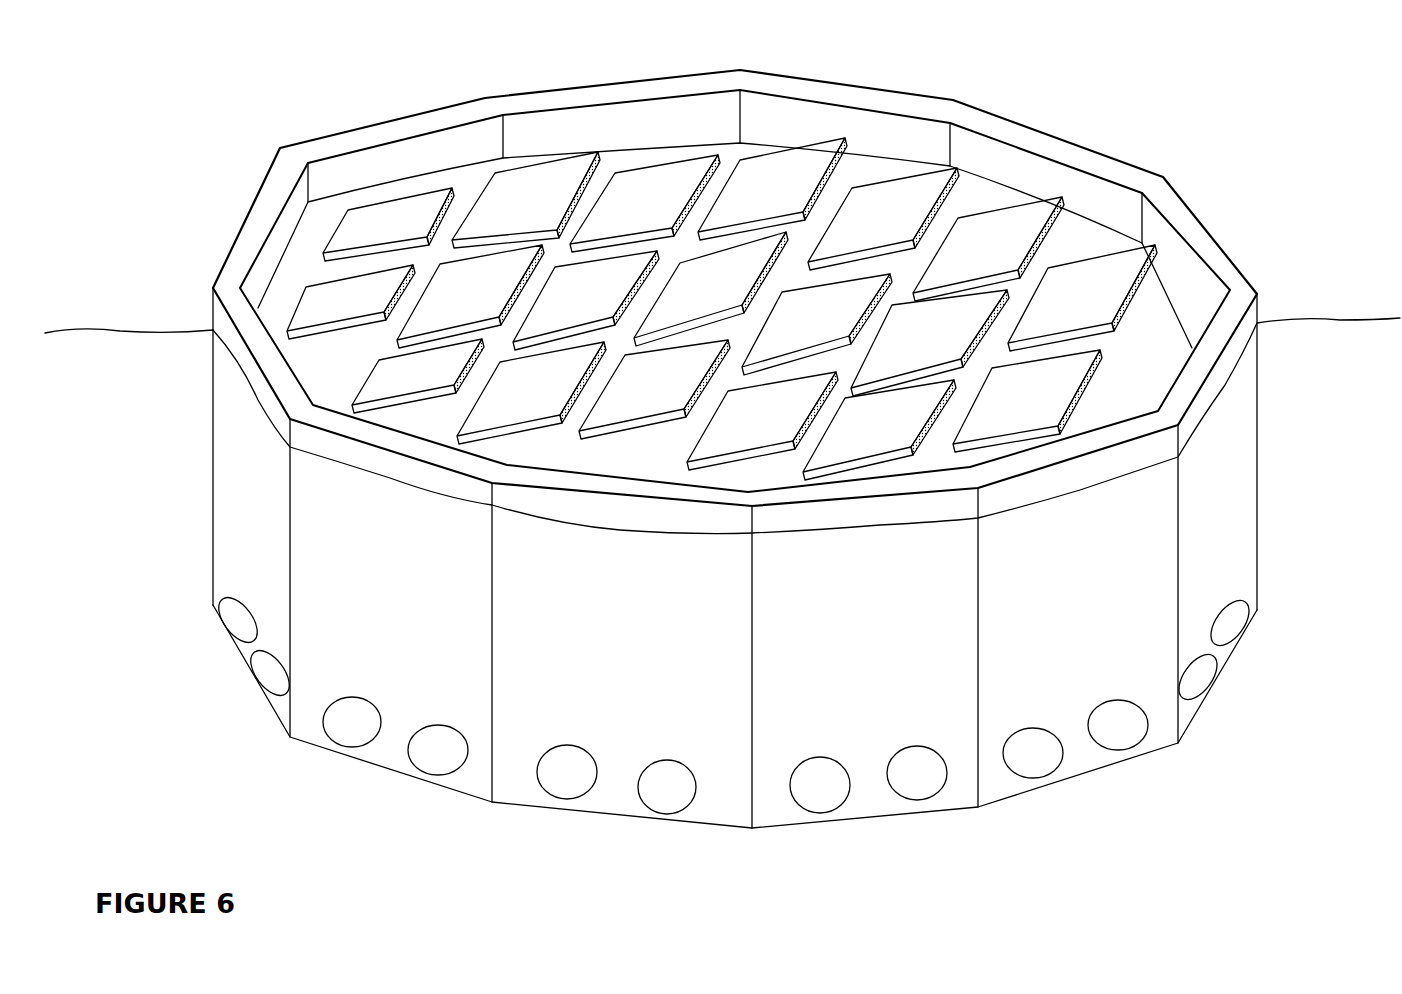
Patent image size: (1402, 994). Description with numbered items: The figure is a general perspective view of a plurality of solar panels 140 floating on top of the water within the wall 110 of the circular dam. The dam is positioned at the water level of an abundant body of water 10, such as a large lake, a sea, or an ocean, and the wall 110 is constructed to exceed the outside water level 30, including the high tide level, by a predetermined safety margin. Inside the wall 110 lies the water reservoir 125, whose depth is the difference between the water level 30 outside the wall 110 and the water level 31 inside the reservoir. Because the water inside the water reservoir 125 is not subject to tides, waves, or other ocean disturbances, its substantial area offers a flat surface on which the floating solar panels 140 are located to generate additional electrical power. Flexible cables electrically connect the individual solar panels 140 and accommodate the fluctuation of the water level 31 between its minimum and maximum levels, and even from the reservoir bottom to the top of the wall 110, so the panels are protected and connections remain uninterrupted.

The abundant body of water 10 is at (153, 657).
The water level 30 is at (1347, 559).
The water level inside the water reservoir 31 is at (1157, 382).
The wall 110 is at (213, 503).
The water reservoir 125 is at (656, 461).
The floating solar panels 140 is at (520, 166).